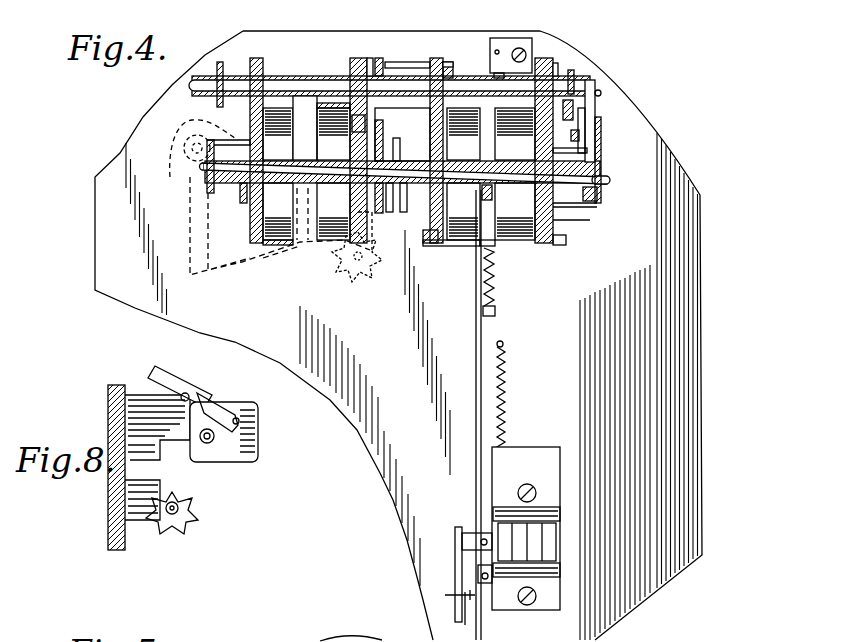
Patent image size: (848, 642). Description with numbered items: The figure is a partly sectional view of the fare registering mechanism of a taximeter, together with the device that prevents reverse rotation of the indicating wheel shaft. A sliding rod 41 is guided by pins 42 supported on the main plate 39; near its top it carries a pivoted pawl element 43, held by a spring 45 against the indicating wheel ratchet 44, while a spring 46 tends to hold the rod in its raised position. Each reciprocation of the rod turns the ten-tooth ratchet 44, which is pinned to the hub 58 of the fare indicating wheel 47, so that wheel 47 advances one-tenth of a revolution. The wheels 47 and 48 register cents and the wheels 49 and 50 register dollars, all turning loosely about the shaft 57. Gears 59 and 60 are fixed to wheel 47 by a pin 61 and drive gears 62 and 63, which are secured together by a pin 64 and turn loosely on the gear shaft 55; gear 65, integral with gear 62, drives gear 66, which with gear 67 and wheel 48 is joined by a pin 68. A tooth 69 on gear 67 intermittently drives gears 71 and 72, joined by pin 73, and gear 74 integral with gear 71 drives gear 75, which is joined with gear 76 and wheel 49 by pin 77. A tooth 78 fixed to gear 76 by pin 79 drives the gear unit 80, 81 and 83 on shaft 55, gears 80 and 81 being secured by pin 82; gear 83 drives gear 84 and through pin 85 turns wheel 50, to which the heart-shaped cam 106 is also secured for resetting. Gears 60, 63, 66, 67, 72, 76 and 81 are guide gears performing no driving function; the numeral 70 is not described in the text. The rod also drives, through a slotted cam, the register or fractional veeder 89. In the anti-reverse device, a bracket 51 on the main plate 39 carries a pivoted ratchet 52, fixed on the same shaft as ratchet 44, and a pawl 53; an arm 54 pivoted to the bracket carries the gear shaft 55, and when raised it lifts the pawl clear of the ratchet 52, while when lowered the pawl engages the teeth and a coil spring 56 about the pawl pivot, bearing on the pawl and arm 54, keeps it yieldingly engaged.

In FIG. 4, the main plate 39 is at (703, 210).
In FIG. 4, the sliding rod 41 is at (476, 322).
In FIG. 4, the pins 42 is at (500, 73).
In FIG. 4, the pawl element 43 is at (492, 230).
In FIG. 4, the indicating wheel ratchet 44 is at (500, 200).
In FIG. 4, the spring 45 is at (496, 312).
In FIG. 4, the spring 46 is at (506, 385).
In FIG. 4, the fare indicating wheel 47 is at (530, 245).
In FIG. 4, the fare indicating wheel 48 is at (464, 108).
In FIG. 4, the fare indicating wheel 49 is at (330, 100).
In FIG. 4, the fare indicating wheel 50 is at (273, 108).
In FIG. 4, the bracket 51 is at (601, 128).
In FIG. 8, the bracket 51 is at (258, 404).
In FIG. 4, the ratchet wheel 52 is at (597, 198).
In FIG. 8, the ratchet wheel 52 is at (168, 535).
In FIG. 4, the pawl 53 is at (601, 118).
In FIG. 8, the pawl 53 is at (182, 450).
In FIG. 4, the arm 54 is at (595, 90).
In FIG. 8, the arm 54 is at (170, 380).
In FIG. 4, the gear shaft 55 is at (601, 93).
In FIG. 8, the gear shaft 55 is at (190, 395).
In FIG. 4, the coil spring 56 is at (601, 132).
In FIG. 8, the coil spring 56 is at (240, 450).
In FIG. 4, the shaft 57 is at (610, 176).
In FIG. 8, the shaft 57 is at (180, 512).
In FIG. 4, the hub 58 is at (600, 207).
In FIG. 4, the gear 59 is at (566, 242).
In FIG. 4, the gear 60 is at (590, 222).
In FIG. 4, the pin 61 is at (587, 150).
In FIG. 4, the gear 62 is at (546, 58).
In FIG. 4, the gear 63 is at (556, 63).
In FIG. 4, the pin 64 is at (573, 72).
In FIG. 4, the gear 65 is at (446, 62).
In FIG. 4, the gear 66 is at (450, 247).
In FIG. 4, the gear 67 is at (432, 243).
In FIG. 4, the pin 68 is at (414, 140).
In FIG. 4, the tooth 69 is at (420, 106).
In FIG. 4, the bar 70 is at (400, 124).
In FIG. 4, the gear 71 is at (434, 58).
In FIG. 4, the gear 72 is at (448, 62).
In FIG. 4, the pin 73 is at (428, 64).
In FIG. 4, the gear 74 is at (379, 58).
In FIG. 4, the gear 75 is at (380, 232).
In FIG. 4, the gear 76 is at (368, 268).
In FIG. 4, the pin 77 is at (318, 163).
In FIG. 4, the tooth 78 is at (345, 103).
In FIG. 4, the pin 79 is at (330, 125).
In FIG. 4, the gear 80 is at (358, 58).
In FIG. 4, the gear 81 is at (371, 58).
In FIG. 4, the pin 82 is at (352, 72).
In FIG. 4, the gear 83 is at (256, 60).
In FIG. 4, the gear 84 is at (263, 245).
In FIG. 4, the pin 85 is at (250, 140).
In FIG. 4, the register or fractional veeder 89 is at (562, 592).
In FIG. 4, the heart-shaped cam 106 is at (243, 203).